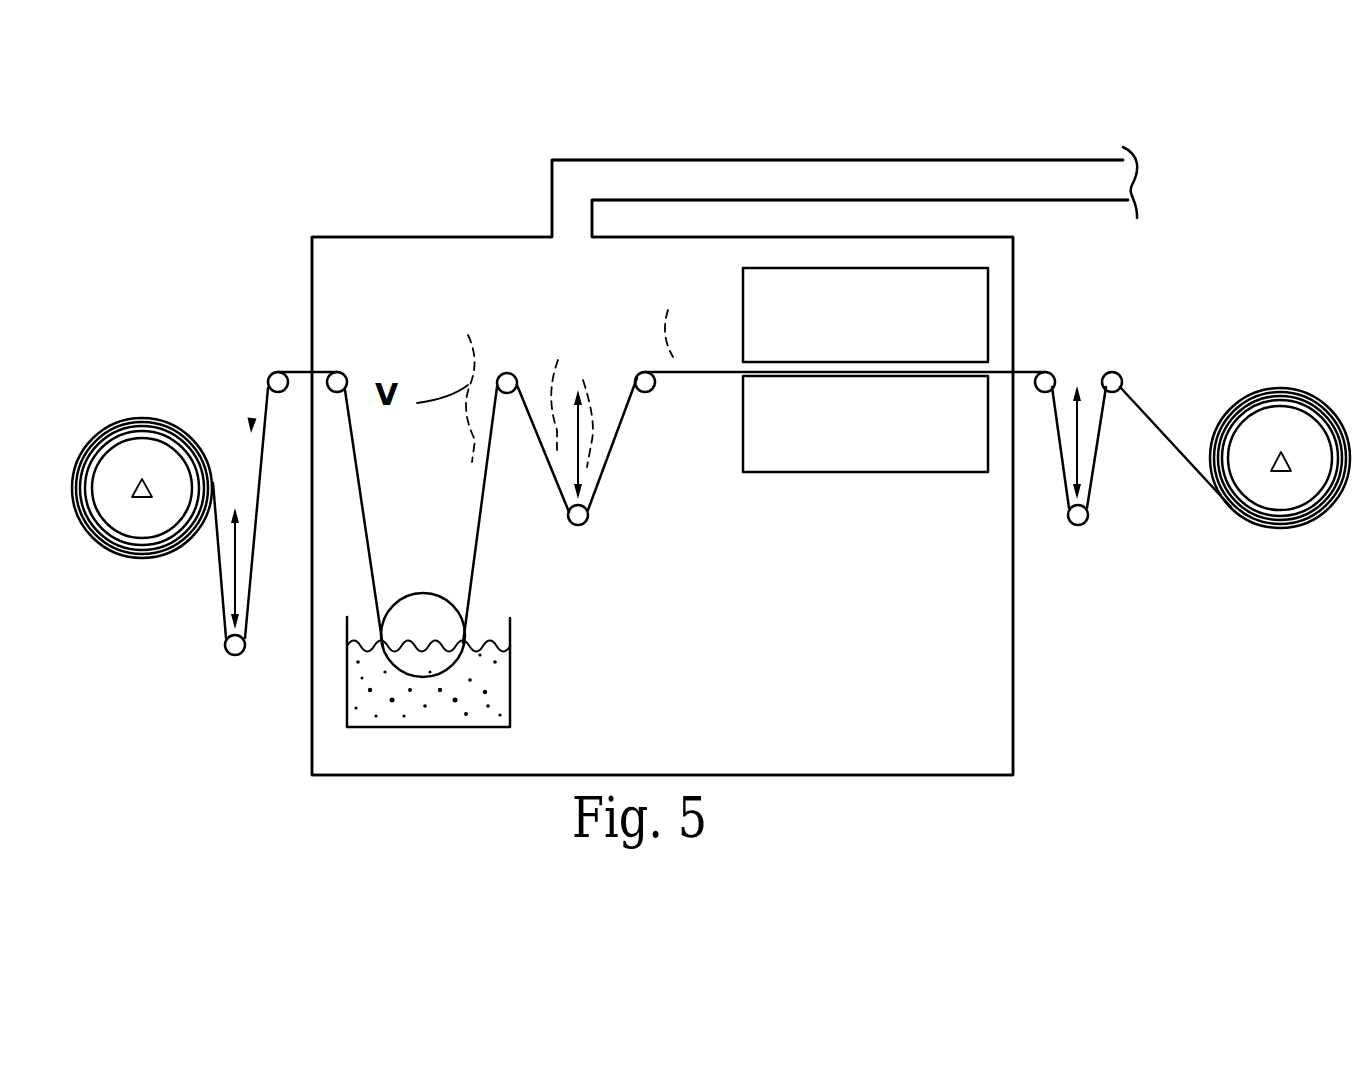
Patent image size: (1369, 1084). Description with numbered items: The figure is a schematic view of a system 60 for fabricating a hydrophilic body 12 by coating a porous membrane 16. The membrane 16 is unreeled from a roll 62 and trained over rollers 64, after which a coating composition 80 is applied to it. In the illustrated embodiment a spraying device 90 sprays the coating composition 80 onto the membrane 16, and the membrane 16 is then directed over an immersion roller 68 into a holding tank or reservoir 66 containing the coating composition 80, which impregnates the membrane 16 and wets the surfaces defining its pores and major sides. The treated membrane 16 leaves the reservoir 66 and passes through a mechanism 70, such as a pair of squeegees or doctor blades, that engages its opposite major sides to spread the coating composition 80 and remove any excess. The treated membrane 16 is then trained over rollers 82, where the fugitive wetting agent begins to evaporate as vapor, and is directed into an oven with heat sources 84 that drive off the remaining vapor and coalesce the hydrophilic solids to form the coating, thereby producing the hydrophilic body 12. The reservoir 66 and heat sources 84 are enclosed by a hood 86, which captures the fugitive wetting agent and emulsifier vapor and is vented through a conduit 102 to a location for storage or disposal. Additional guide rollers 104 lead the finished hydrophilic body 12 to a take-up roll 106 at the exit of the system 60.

The system 60 is at (275, 257).
The hood 86 is at (400, 237).
The conduit 102 is at (1023, 202).
The heat sources 84 is at (743, 303).
The roll 62 is at (163, 552).
The membrane 16 is at (247, 408).
The rollers 64 is at (280, 378).
The spraying device 90 is at (358, 512).
The mechanism 70 is at (485, 483).
The immersion roller 68 is at (430, 615).
The reservoir 66 is at (512, 637).
The coating composition 80 is at (493, 703).
The rollers 82 is at (641, 377).
The guide rollers 104 is at (1053, 370).
The hydrophilic body 12 is at (1148, 403).
The take-up roll 106 is at (1290, 530).